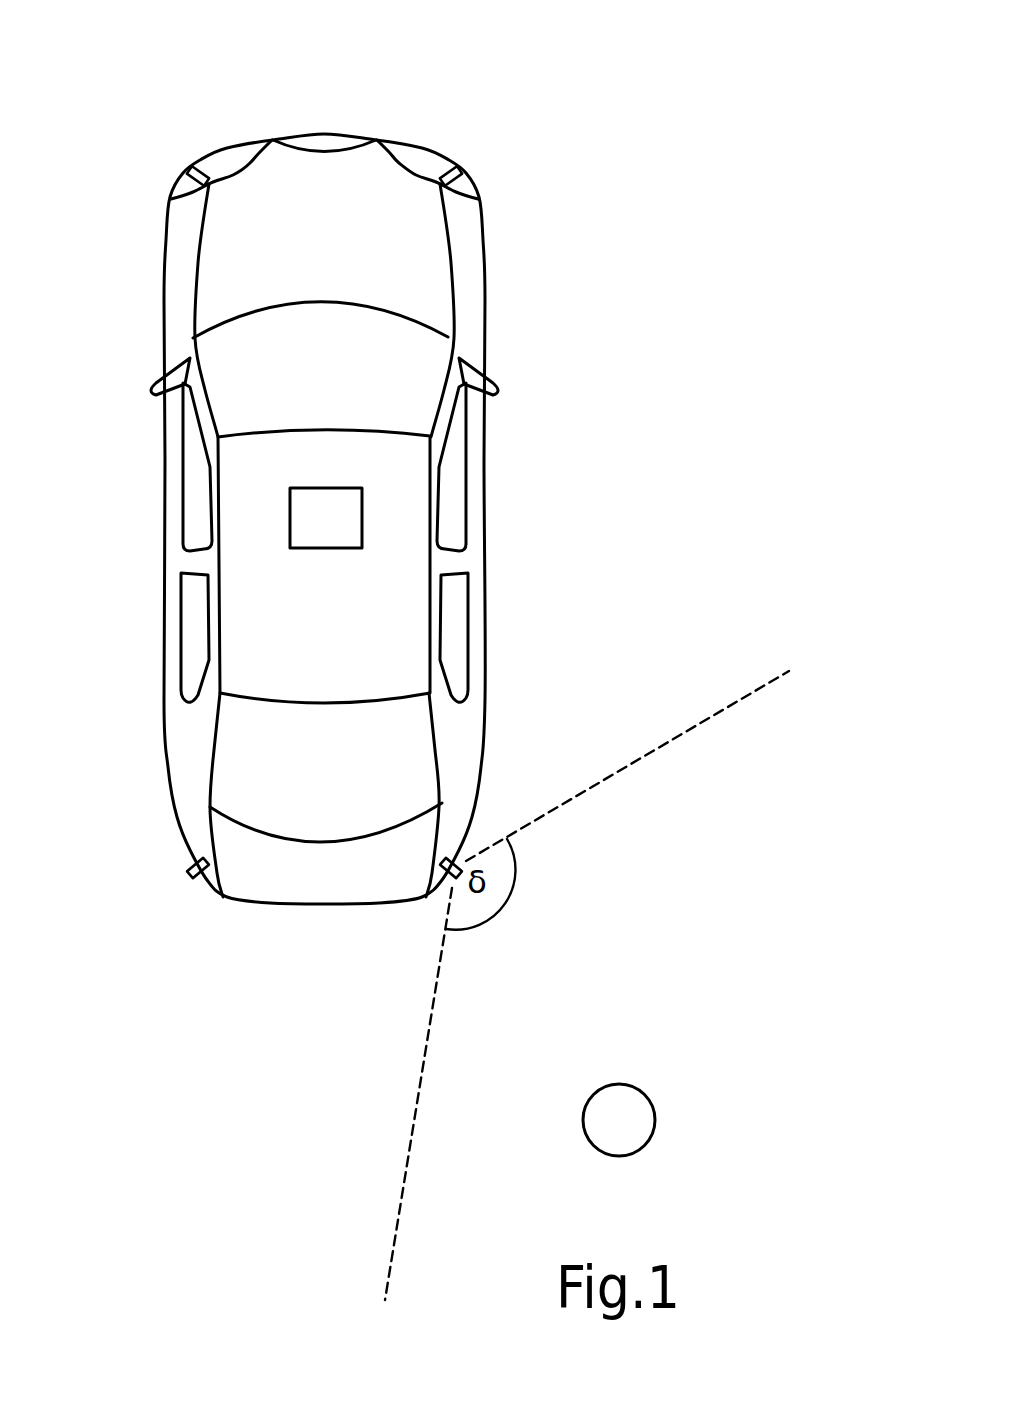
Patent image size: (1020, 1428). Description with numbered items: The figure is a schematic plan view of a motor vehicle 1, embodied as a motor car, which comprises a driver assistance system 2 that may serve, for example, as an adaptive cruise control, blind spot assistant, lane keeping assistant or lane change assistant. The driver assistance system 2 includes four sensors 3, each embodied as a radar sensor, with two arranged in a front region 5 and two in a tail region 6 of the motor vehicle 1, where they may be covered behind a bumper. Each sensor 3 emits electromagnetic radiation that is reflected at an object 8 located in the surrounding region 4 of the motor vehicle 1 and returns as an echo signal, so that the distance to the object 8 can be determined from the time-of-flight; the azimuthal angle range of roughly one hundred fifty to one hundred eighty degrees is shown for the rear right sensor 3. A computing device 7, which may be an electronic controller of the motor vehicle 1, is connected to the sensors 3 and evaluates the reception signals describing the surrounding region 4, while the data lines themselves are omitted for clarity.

The motor vehicle 1 is at (302, 137).
The driver assistance system 2 is at (237, 117).
The sensor 3 is at (192, 170).
The surrounding region 4 is at (309, 66).
The front region 5 is at (405, 117).
The tail region 6 is at (260, 917).
The computing device 7 is at (305, 518).
The object 8 is at (647, 1093).